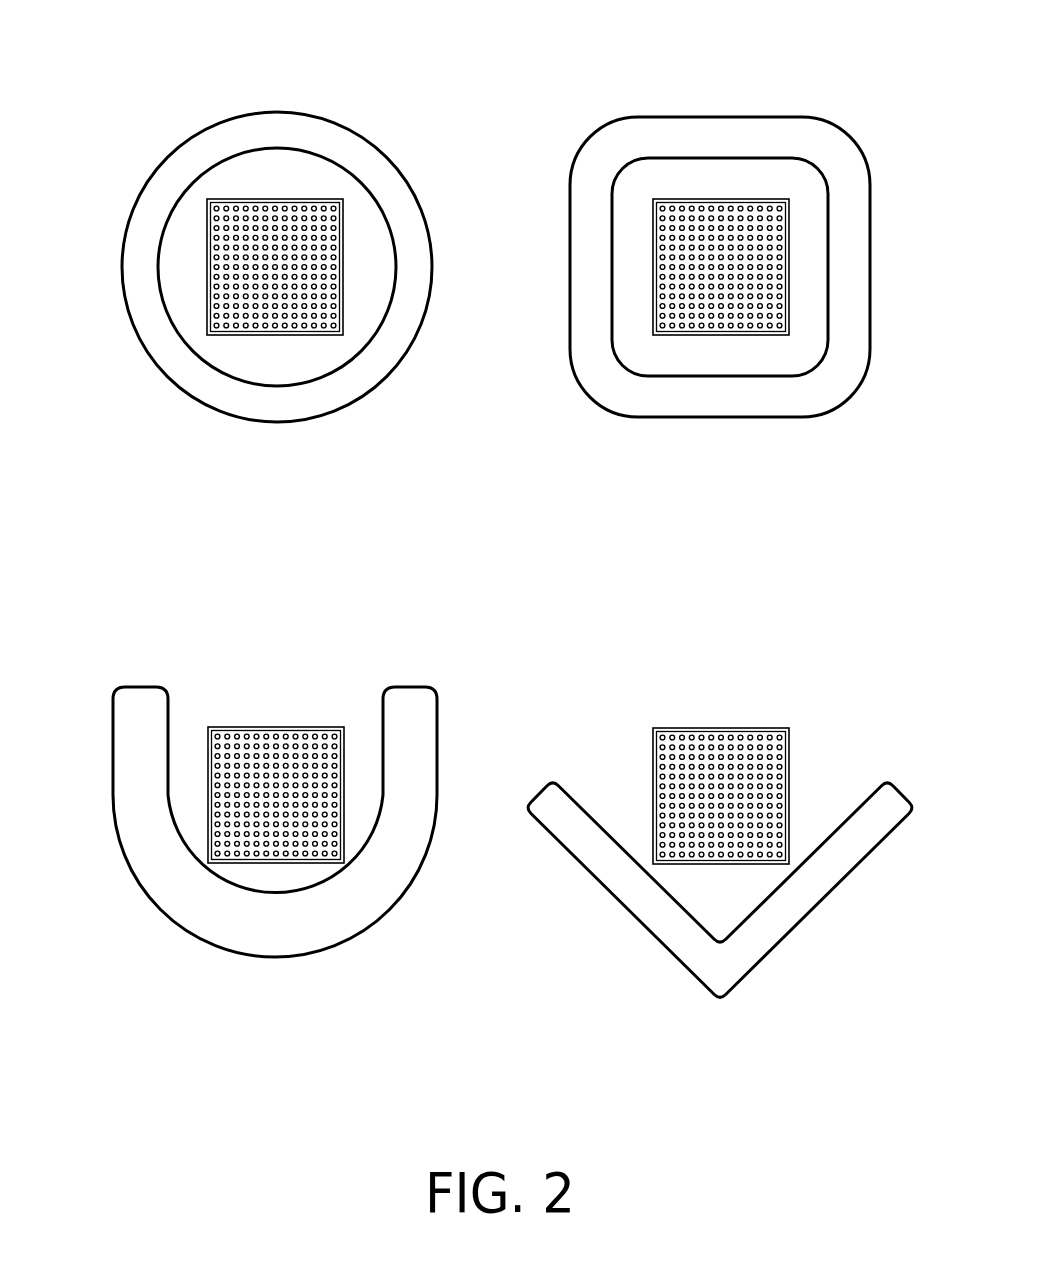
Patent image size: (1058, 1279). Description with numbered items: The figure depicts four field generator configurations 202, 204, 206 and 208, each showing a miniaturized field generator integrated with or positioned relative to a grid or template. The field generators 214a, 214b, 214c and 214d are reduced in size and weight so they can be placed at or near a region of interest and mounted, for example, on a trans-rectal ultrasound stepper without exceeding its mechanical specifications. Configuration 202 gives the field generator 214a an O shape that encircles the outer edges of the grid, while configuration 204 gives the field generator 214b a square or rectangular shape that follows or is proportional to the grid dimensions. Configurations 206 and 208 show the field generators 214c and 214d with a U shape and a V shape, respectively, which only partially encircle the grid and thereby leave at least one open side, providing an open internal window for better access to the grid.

The field generator configuration 202 is at (141, 84).
The field generator configuration 204 is at (854, 84).
The field generator configuration 206 is at (141, 637).
The field generator configuration 208 is at (854, 637).
The field generator 214a is at (275, 420).
The field generator 214b is at (703, 417).
The field generator 214c is at (210, 950).
The field generator 214d is at (665, 953).